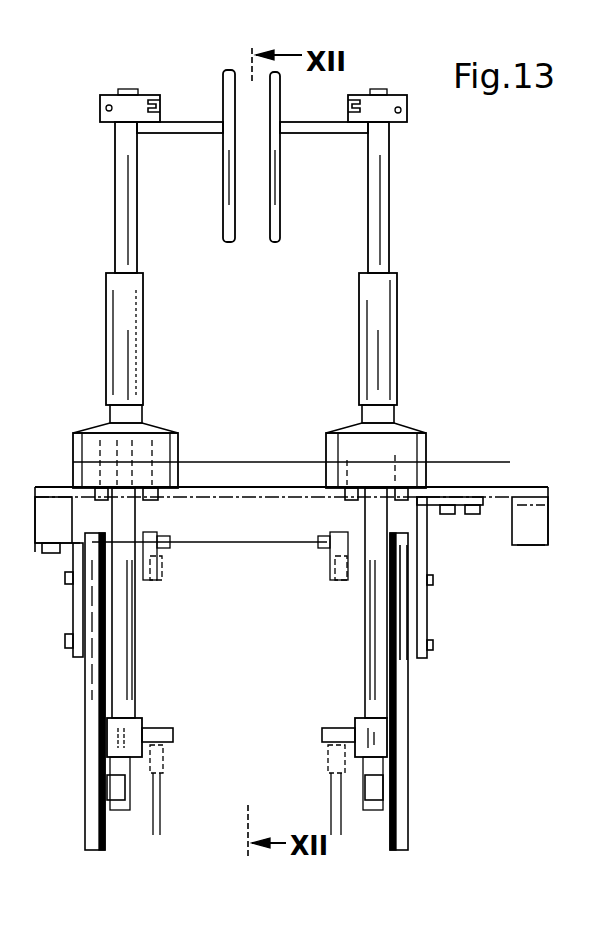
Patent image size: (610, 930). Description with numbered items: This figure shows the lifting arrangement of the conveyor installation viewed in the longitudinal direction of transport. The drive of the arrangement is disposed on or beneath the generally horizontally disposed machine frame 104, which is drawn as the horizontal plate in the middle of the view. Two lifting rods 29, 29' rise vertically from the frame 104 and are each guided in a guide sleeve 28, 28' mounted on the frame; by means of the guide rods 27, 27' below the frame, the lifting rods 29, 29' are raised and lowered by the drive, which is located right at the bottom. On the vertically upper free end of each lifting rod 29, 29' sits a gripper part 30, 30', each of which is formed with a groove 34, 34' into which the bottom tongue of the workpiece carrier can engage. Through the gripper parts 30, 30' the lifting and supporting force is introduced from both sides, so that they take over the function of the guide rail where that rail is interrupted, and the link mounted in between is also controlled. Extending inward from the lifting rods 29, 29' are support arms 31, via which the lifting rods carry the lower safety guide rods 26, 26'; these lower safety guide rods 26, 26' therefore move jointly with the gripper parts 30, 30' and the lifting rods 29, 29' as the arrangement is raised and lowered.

The lower safety guide rod 26 is at (204, 156).
The lower safety guide rod 26' is at (298, 157).
The guide rod 27 is at (159, 776).
The guide rod 27' is at (326, 776).
The guide sleeve 28 is at (291, 380).
The guide sleeve 28' is at (385, 380).
The lifting rod 29 is at (98, 420).
The lifting rod 29' is at (399, 420).
The gripper part 30 is at (127, 89).
The gripper part 30' is at (398, 101).
The support arm 31 is at (188, 128).
The groove 34 is at (165, 84).
The groove 34' is at (328, 106).
The machine frame 104 is at (202, 537).